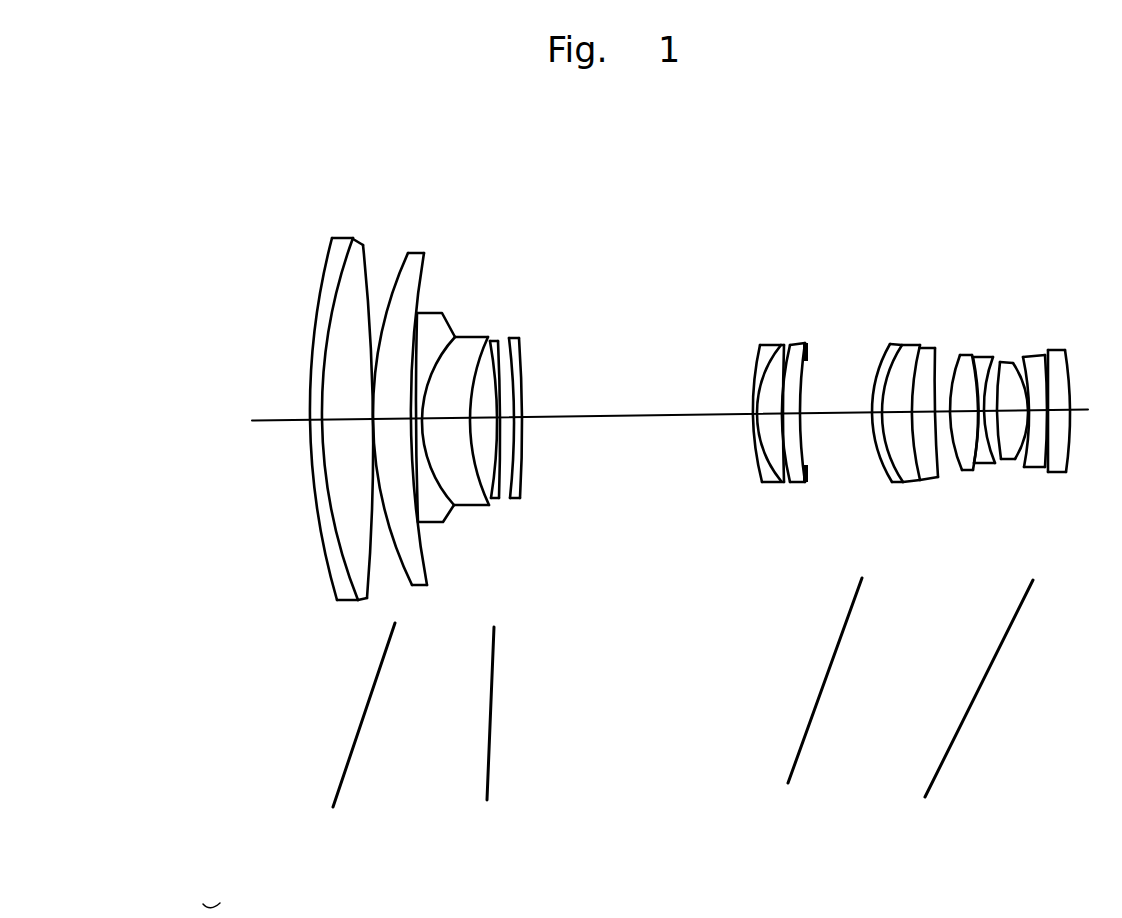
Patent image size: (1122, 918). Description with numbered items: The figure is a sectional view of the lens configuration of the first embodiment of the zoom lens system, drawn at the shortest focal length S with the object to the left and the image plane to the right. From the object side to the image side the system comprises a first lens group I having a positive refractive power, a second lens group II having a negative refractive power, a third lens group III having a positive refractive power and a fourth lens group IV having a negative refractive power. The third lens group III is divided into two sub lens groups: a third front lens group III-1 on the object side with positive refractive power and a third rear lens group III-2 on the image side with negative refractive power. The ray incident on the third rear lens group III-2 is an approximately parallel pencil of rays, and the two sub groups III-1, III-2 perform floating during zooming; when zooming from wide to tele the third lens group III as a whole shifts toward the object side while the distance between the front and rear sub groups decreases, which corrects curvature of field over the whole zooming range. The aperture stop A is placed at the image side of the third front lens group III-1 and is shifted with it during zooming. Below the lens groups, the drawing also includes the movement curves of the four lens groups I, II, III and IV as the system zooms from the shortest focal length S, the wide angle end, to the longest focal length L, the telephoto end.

The first lens group I is at (433, 170).
The second lens group II is at (525, 302).
The third lens group III is at (937, 245).
The third front lens group III-1 is at (755, 273).
The third rear lens group III-2 is at (880, 273).
The fourth lens group IV is at (1068, 322).
The aperture stop A is at (808, 477).
The shortest focal length S is at (617, 420).
The longest focal length L is at (596, 703).